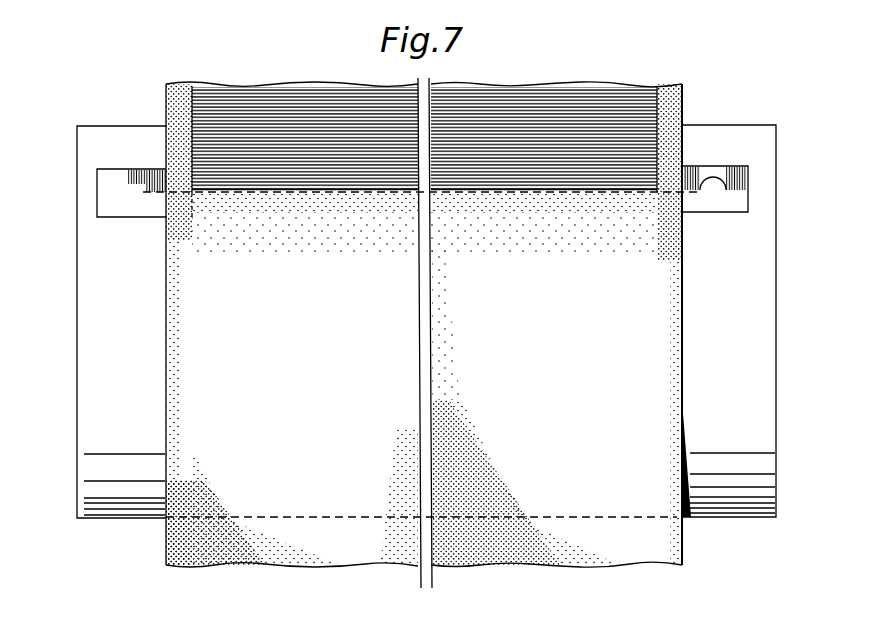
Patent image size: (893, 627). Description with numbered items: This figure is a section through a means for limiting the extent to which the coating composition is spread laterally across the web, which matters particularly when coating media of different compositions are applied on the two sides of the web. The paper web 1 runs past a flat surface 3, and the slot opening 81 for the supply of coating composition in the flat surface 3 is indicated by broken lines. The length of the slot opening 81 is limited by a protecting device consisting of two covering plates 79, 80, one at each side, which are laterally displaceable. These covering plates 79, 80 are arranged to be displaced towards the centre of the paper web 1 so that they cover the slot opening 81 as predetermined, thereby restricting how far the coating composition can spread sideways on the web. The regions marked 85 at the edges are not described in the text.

The paper web 1 is at (663, 544).
The flat surface 3 is at (755, 340).
The covering plate 79 is at (730, 200).
The covering plate 80 is at (118, 193).
The slot opening 81 is at (682, 168).
The edge strip 85 is at (186, 115).